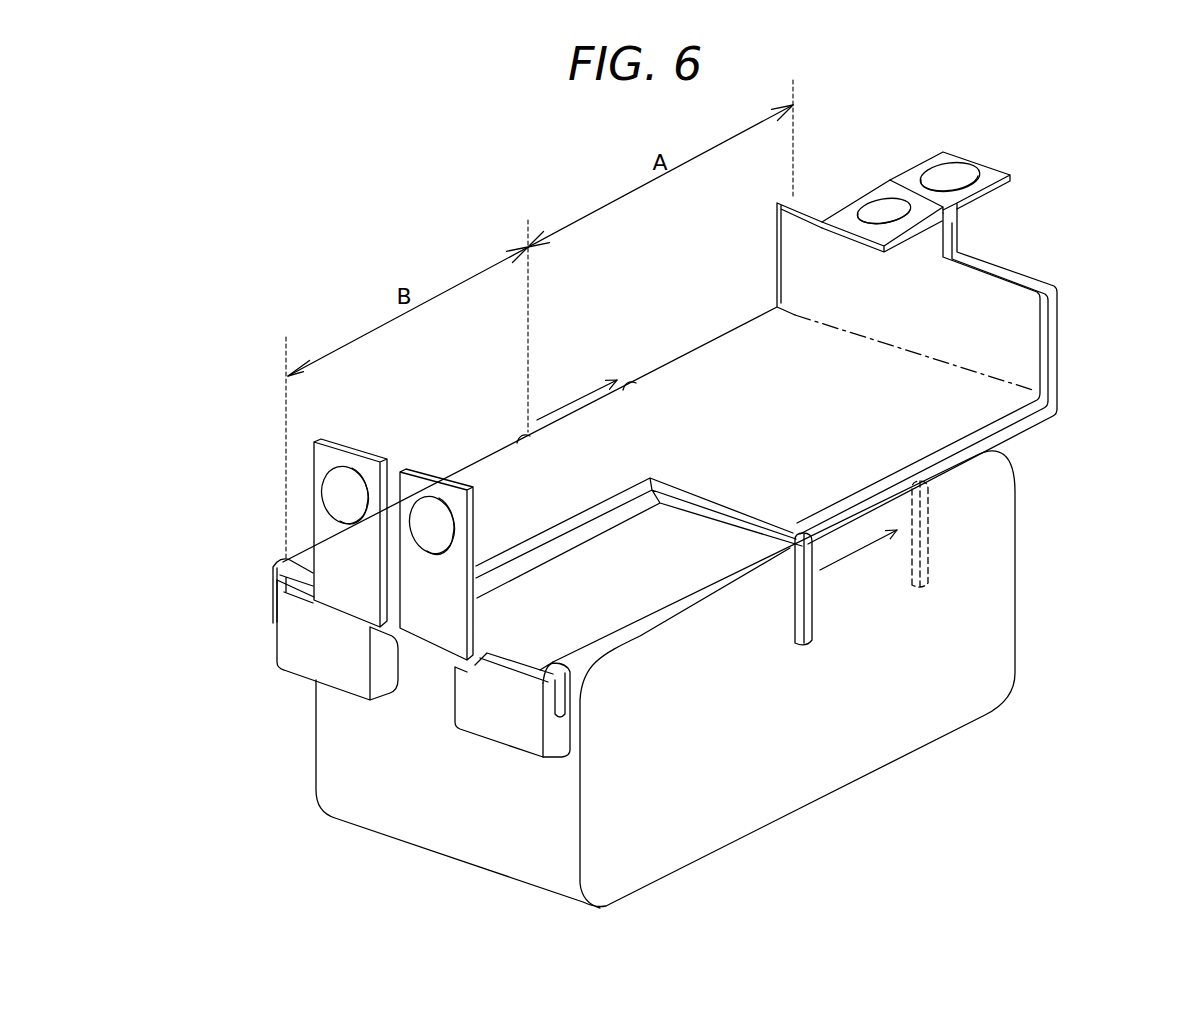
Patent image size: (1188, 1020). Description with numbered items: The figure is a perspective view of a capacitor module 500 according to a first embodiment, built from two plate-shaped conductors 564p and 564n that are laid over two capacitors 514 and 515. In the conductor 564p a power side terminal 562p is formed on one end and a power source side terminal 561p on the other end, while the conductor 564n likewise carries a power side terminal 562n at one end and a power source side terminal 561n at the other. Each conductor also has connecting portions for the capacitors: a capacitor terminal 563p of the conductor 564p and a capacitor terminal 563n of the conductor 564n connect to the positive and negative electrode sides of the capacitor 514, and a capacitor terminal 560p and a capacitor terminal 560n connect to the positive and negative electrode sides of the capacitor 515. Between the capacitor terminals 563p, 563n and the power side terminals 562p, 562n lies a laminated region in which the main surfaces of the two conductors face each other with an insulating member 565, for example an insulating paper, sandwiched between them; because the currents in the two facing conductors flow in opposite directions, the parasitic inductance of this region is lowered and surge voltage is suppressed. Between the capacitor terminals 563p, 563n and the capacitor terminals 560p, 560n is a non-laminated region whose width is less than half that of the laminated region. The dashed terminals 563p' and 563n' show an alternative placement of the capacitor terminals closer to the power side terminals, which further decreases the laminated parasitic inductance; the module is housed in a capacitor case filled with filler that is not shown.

The capacitor module 500 is at (527, 152).
The capacitor 514 is at (998, 638).
The capacitor 515 is at (470, 707).
The capacitor terminal 560n is at (272, 590).
The capacitor terminal 560p is at (576, 690).
The power source side terminal 561n is at (345, 466).
The power source side terminal 561p is at (421, 487).
The power side terminal 562n is at (876, 203).
The power side terminal 562p is at (945, 153).
The capacitor terminal 563n is at (490, 400).
The capacitor terminal 563n' is at (586, 371).
The capacitor terminal 563p is at (860, 589).
The capacitor terminal 563p' is at (963, 538).
The conductor 564n is at (710, 372).
The conductor 564p is at (1025, 436).
The insulating member 565 is at (1058, 408).